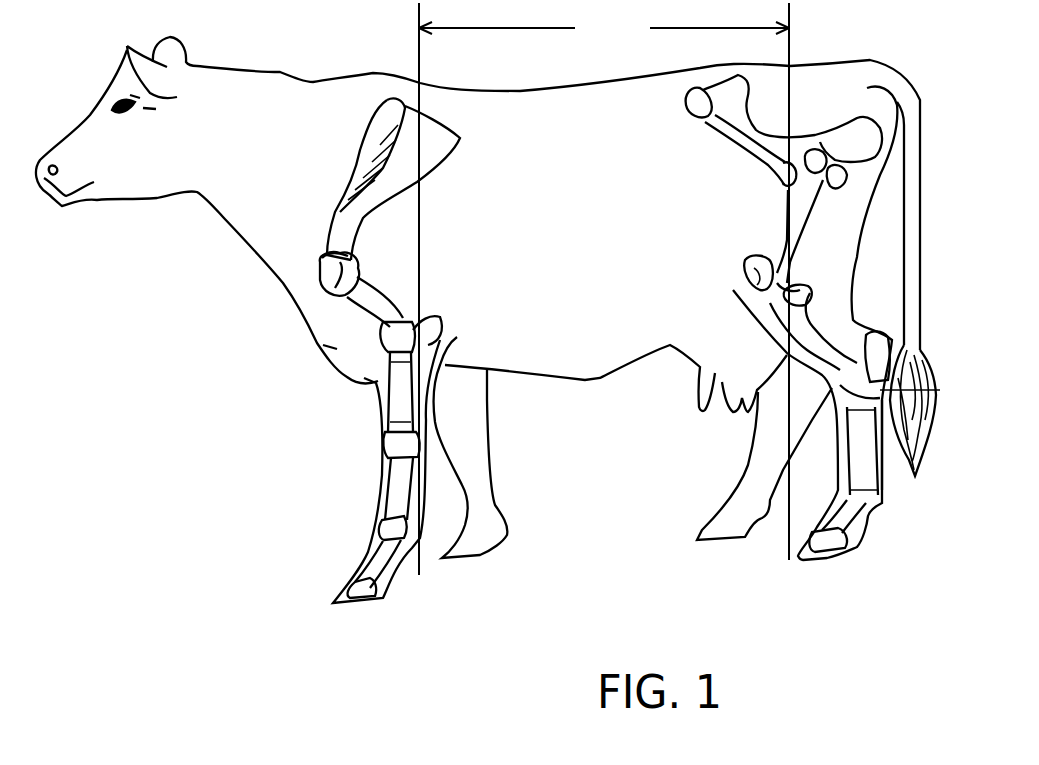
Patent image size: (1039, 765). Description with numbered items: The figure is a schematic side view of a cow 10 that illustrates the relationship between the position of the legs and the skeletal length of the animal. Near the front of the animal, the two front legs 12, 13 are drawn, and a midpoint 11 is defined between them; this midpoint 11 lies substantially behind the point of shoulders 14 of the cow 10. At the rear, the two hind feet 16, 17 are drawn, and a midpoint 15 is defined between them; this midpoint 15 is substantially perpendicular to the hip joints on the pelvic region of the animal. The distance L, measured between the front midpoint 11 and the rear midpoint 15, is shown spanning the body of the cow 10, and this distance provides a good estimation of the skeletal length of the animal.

The cow 10 is at (488, 263).
The midpoint between the two front legs 11 is at (419, 575).
The front leg 12 is at (378, 520).
The front leg 13 is at (488, 500).
The point of shoulders 14 is at (318, 262).
The midpoint between the hind feet 15 is at (768, 547).
The hind foot 16 is at (740, 497).
The hind foot 17 is at (882, 504).